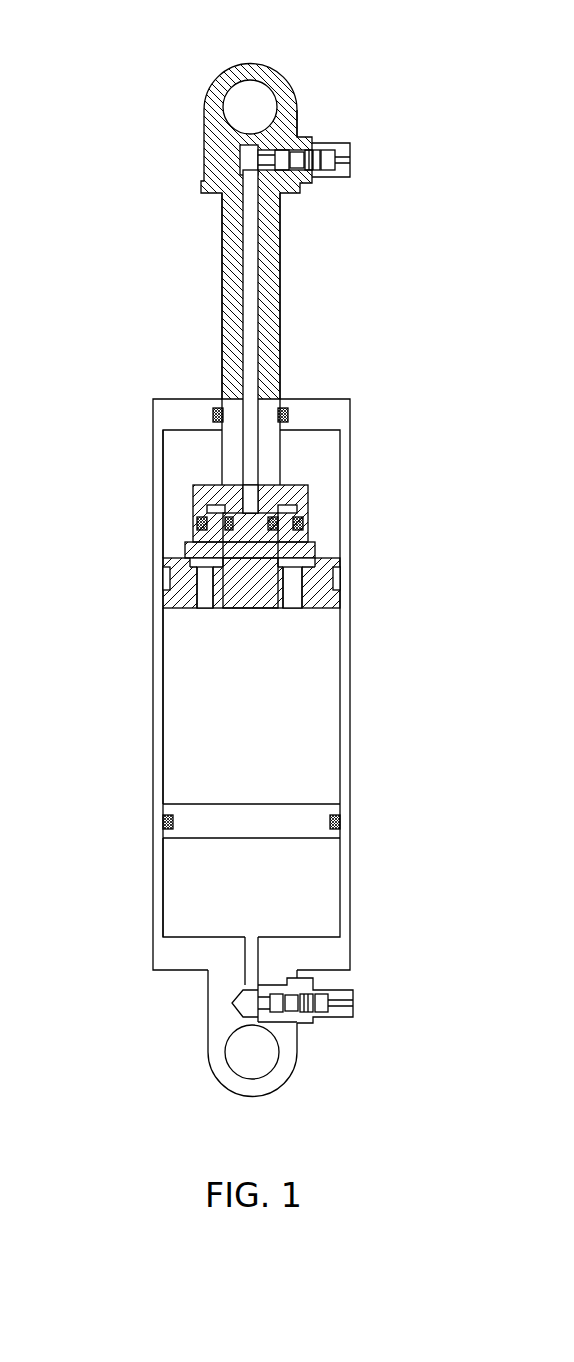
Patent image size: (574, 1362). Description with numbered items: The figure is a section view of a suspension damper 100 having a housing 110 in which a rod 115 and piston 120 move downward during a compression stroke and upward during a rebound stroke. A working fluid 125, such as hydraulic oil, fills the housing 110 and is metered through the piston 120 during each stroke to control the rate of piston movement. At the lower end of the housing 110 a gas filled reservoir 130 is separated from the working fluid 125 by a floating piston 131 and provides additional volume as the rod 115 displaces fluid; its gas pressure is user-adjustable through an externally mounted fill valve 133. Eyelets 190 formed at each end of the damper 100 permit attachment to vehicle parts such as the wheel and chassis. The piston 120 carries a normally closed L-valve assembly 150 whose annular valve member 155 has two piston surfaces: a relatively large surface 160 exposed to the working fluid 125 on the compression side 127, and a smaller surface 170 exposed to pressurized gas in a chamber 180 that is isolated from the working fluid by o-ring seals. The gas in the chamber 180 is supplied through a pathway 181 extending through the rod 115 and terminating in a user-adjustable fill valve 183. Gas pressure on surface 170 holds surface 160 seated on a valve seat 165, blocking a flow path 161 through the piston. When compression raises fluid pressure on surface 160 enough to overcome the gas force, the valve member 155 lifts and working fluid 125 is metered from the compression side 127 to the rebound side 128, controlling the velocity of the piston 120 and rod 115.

The suspension damper 100 is at (130, 470).
The housing 110 is at (153, 418).
The rod 115 is at (222, 255).
The piston 120 is at (318, 588).
The working fluid 125 is at (207, 471).
The compression side 127 is at (252, 780).
The rebound side 128 is at (328, 465).
The gas filled reservoir 130 is at (305, 895).
The floating piston 131 is at (292, 820).
The fill valve 133 is at (332, 1018).
The valve assembly 150 is at (313, 512).
The valve member 155 is at (232, 548).
The piston surface 160 is at (295, 567).
The flow path 161 is at (195, 592).
The valve seat 165 is at (183, 587).
The piston surface 170 is at (218, 482).
The chamber 180 is at (306, 500).
The pathway 181 is at (250, 228).
The fill valve 183 is at (340, 140).
The eyelets 190 is at (248, 98).